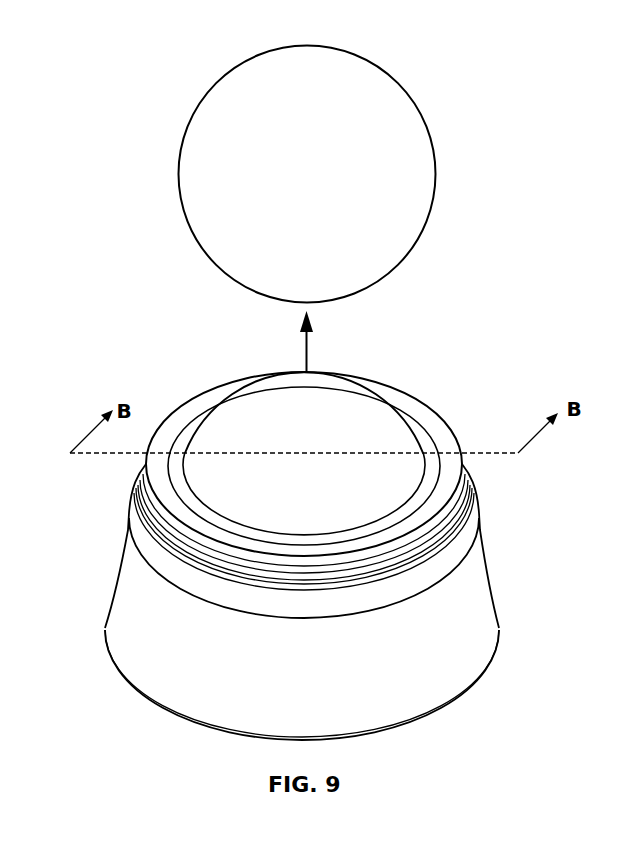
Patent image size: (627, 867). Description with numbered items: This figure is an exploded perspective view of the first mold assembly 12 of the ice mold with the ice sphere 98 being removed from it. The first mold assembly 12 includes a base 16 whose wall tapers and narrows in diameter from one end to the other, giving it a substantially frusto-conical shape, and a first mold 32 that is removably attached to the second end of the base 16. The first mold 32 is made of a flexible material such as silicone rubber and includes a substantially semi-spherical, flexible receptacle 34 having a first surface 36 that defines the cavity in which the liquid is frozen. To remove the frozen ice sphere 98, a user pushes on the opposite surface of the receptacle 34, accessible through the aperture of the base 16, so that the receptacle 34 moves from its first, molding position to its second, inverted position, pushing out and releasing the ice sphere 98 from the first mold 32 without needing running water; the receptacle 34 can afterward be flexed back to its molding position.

The ice sphere 98 is at (424, 172).
The first mold assembly 12 is at (494, 562).
The base 16 is at (468, 657).
The first mold 32 is at (427, 418).
The first surface 36 is at (242, 402).
The receptacle 34 is at (367, 405).